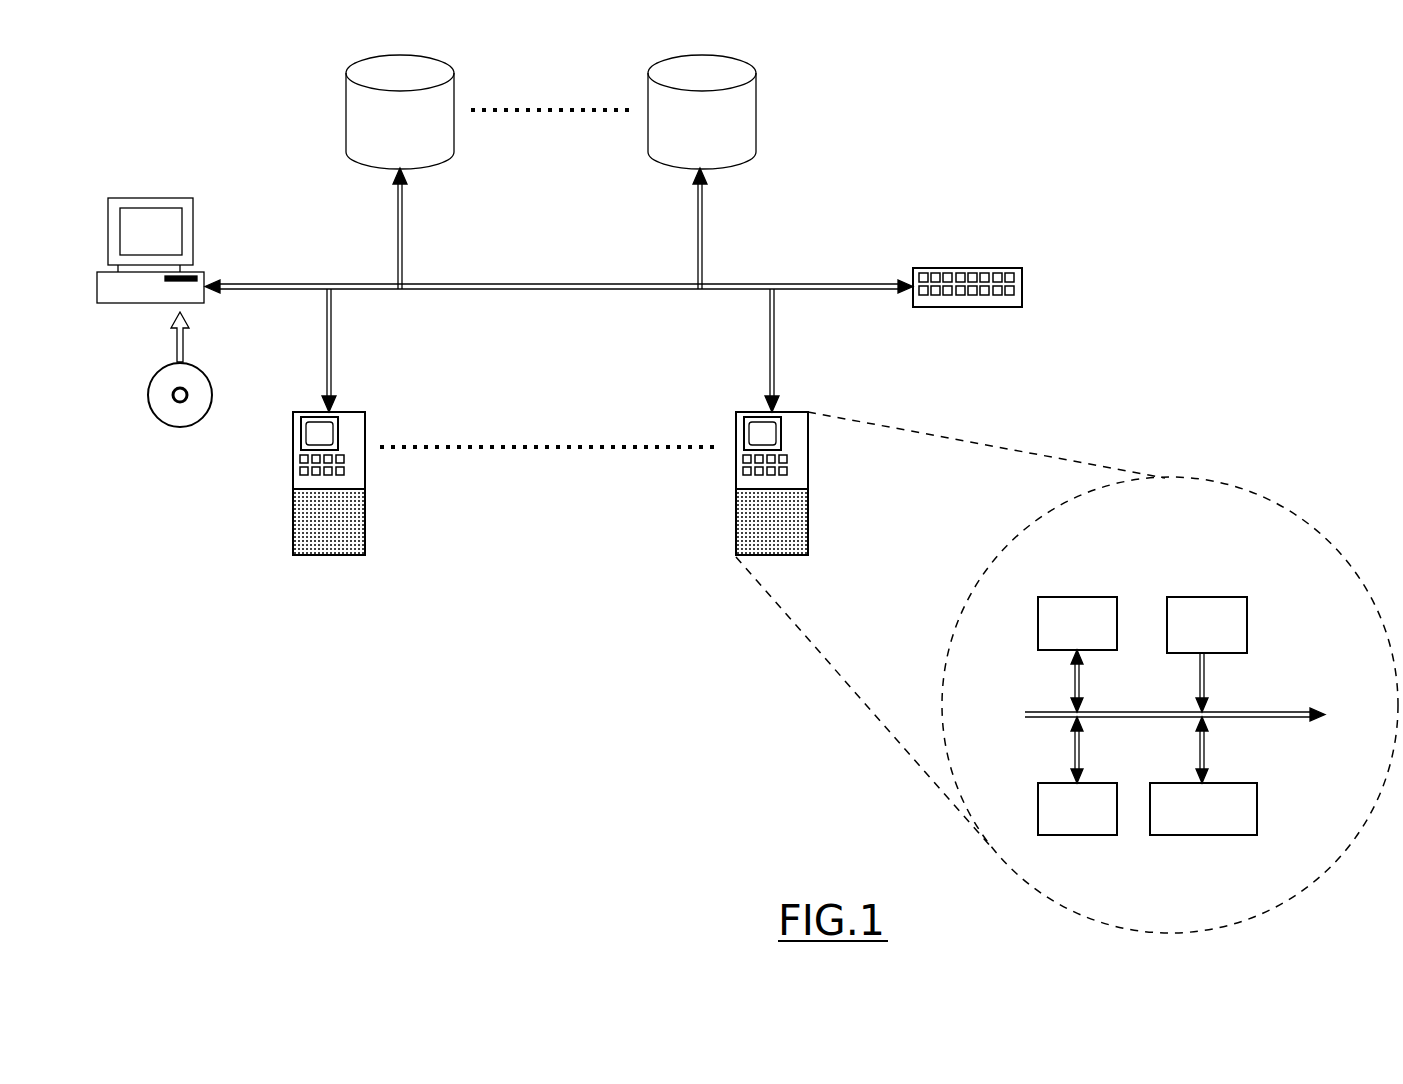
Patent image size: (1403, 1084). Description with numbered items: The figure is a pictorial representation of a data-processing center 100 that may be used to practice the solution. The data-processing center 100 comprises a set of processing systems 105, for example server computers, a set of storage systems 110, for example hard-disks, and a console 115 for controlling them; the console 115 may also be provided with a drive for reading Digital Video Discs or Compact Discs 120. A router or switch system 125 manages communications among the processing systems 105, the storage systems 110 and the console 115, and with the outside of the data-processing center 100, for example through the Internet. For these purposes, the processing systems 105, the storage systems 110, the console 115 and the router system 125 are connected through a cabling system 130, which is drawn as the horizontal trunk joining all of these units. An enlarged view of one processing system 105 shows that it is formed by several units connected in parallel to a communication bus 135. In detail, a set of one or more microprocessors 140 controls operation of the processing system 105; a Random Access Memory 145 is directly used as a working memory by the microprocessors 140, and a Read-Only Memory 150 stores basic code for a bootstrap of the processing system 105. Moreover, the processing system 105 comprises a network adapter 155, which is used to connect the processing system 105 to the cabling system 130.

The data-processing center 100 is at (1229, 117).
The processing system 105 is at (599, 489).
The storage system 110 is at (517, 134).
The console 115 is at (154, 224).
The Digital Video Disc or Compact Disc 120 is at (154, 394).
The router system 125 is at (990, 263).
The cabling system 130 is at (559, 290).
The communication bus 135 is at (1201, 734).
The microprocessor 140 is at (1105, 635).
The Random Access Memory 145 is at (1097, 798).
The Read-Only Memory 150 is at (1233, 635).
The network adapter 155 is at (1221, 798).